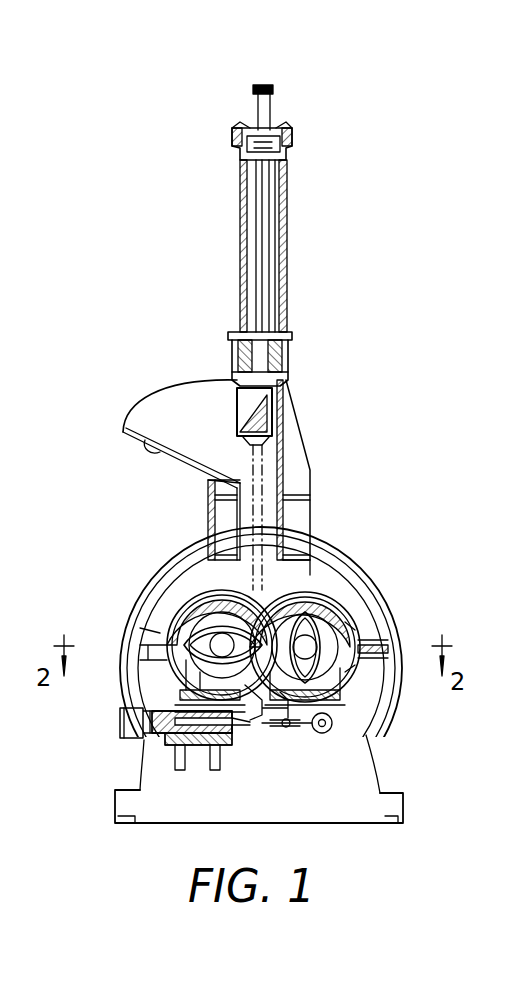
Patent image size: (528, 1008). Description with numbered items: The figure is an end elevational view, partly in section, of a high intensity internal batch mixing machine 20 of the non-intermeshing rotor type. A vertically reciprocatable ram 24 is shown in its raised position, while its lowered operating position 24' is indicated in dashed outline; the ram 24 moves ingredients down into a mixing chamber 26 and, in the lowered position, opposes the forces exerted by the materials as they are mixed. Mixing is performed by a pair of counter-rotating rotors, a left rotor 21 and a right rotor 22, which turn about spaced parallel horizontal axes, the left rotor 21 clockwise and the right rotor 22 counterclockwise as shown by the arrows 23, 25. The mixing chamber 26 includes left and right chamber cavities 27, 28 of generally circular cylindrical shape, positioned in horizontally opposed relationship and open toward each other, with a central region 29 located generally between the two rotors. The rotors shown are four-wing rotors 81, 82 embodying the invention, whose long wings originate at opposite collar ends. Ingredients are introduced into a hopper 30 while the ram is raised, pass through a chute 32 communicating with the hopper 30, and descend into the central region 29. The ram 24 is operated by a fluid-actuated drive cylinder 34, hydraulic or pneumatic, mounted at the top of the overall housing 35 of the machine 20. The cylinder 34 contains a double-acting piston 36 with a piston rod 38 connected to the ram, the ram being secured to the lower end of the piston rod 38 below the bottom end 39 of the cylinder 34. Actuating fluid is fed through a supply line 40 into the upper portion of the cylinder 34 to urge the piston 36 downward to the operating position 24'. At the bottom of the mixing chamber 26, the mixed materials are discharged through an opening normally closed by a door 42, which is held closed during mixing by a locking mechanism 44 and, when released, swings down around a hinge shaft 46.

The internal mixing machine 20 is at (402, 325).
The supply line 40 is at (269, 112).
The double-acting piston 36 is at (283, 160).
The fluid-actuated drive cylinder 34 is at (288, 264).
The piston rod 38 is at (271, 314).
The bottom end of cylinder 39 is at (288, 356).
The hopper 30 is at (166, 420).
The ram 24 is at (297, 416).
The chute 32 is at (276, 492).
The lowered operating position of ram 24' is at (308, 517).
The central region 29 is at (290, 592).
The arrow 23 is at (206, 580).
The housing 35 is at (182, 557).
The mixing chamber 26 is at (170, 613).
The left rotor 21 is at (178, 636).
The four-wing rotor 81 is at (172, 662).
The left chamber cavity 27 is at (196, 665).
The arrow 25 is at (312, 600).
The four-wing rotor 82 is at (328, 612).
The right chamber cavity 28 is at (358, 655).
The right rotor 22 is at (330, 676).
The locking mechanism 44 is at (134, 733).
The door 42 is at (274, 708).
The hinge shaft 46 is at (333, 725).